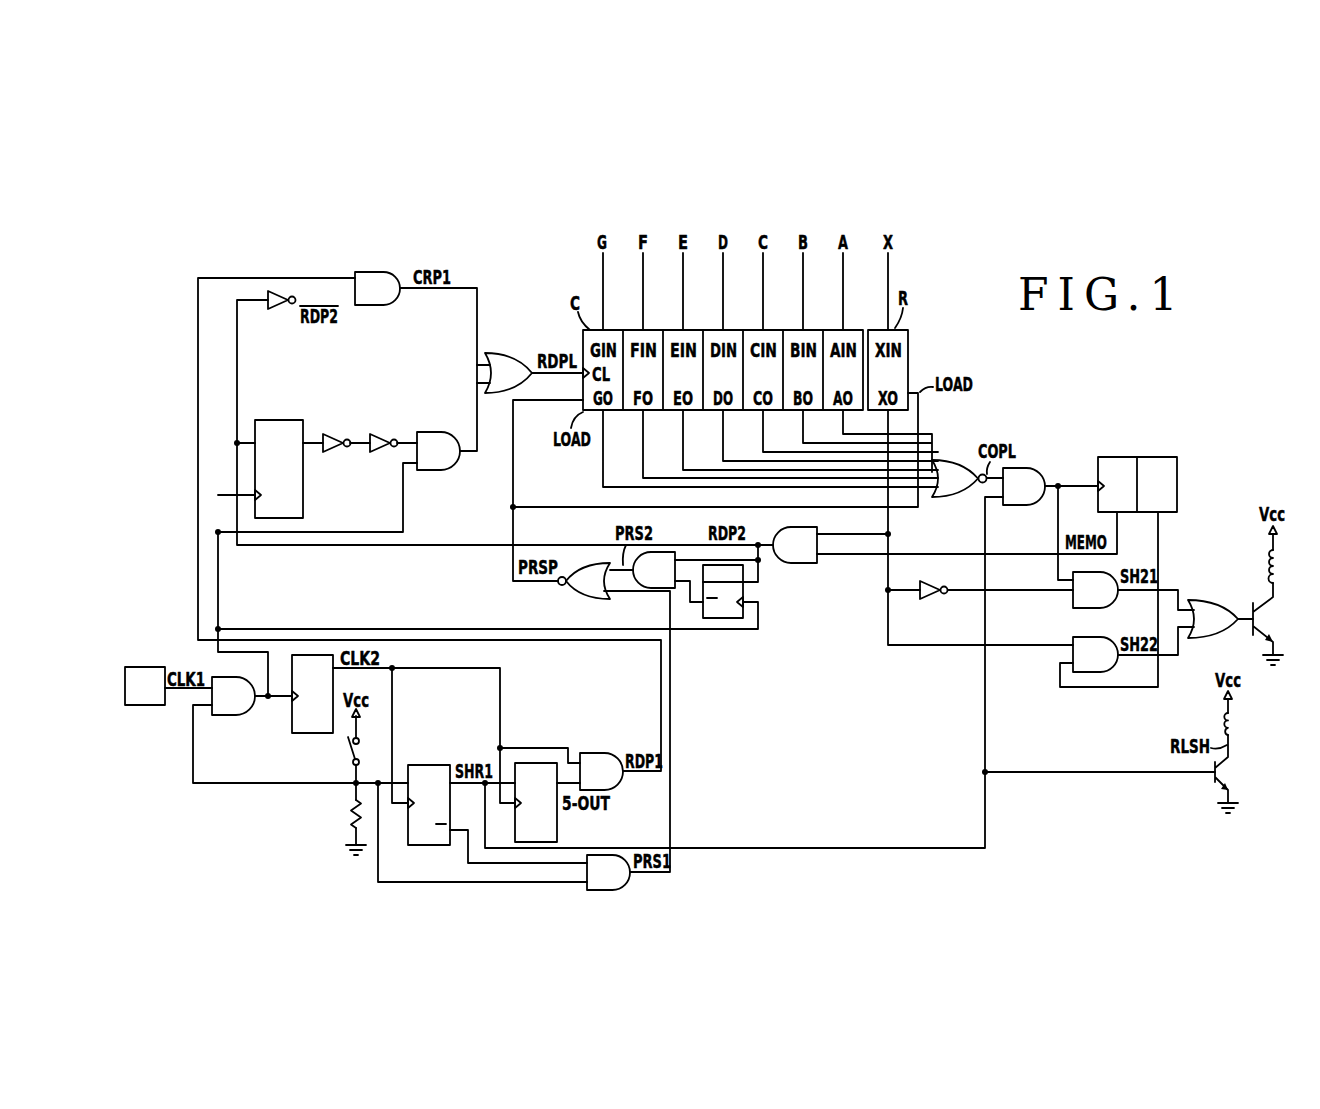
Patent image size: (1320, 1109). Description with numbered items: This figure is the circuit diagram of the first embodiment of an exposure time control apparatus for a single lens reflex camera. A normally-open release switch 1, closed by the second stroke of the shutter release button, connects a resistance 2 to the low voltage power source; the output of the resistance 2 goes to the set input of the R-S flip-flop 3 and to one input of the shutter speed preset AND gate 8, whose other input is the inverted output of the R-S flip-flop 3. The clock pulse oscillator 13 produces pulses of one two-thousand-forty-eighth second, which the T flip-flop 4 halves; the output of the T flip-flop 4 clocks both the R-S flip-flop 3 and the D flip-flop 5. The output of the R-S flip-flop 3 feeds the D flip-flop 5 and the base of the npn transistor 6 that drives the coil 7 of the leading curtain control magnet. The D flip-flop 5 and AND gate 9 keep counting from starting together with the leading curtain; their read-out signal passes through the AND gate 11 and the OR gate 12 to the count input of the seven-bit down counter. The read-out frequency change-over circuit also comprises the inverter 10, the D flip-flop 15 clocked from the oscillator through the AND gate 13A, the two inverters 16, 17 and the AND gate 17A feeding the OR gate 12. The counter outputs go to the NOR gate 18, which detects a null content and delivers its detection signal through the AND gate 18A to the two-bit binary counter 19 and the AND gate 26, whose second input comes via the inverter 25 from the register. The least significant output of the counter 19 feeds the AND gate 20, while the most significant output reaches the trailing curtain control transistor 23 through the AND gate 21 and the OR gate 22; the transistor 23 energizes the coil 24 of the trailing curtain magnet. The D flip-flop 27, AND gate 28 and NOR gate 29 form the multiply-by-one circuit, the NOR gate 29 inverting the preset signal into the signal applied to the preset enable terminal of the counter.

The release switch 1 is at (359, 752).
The resistance 2 is at (350, 816).
The R-S flip-flop 3 is at (430, 765).
The T flip-flop 4 is at (314, 735).
The D flip-flop 5 is at (557, 828).
The npn transistor 6 is at (1222, 776).
The coil of the shutter leading curtain control magnet 7 is at (1232, 728).
The shutter speed preset AND gate 8 is at (608, 872).
The AND gate 9 is at (601, 771).
The inverter 10 is at (282, 308).
The AND gate 11 is at (377, 288).
The OR gate 12 is at (508, 373).
The clock pulse oscillator 13 is at (149, 707).
The AND gate 13A is at (233, 696).
The D flip-flop 15 is at (278, 419).
The inverter 16 is at (335, 453).
The inverter 17 is at (382, 453).
The AND gate 17A is at (438, 451).
The NOR gate 18 is at (959, 478).
The AND gate 18A is at (1024, 486).
The 2 bit binary counter 19 is at (1115, 457).
The AND gate 20 is at (795, 545).
The AND gate 21 is at (1095, 654).
The OR gate 22 is at (1213, 619).
The shutter trailing curtain control transistor 23 is at (1258, 617).
The coil of the shutter trailing curtain control magnet 24 is at (1269, 568).
The inverter 25 is at (932, 601).
The AND gate 26 is at (1095, 590).
The D flip-flop 27 is at (745, 590).
The AND gate 28 is at (654, 570).
The NOR gate 29 is at (584, 581).